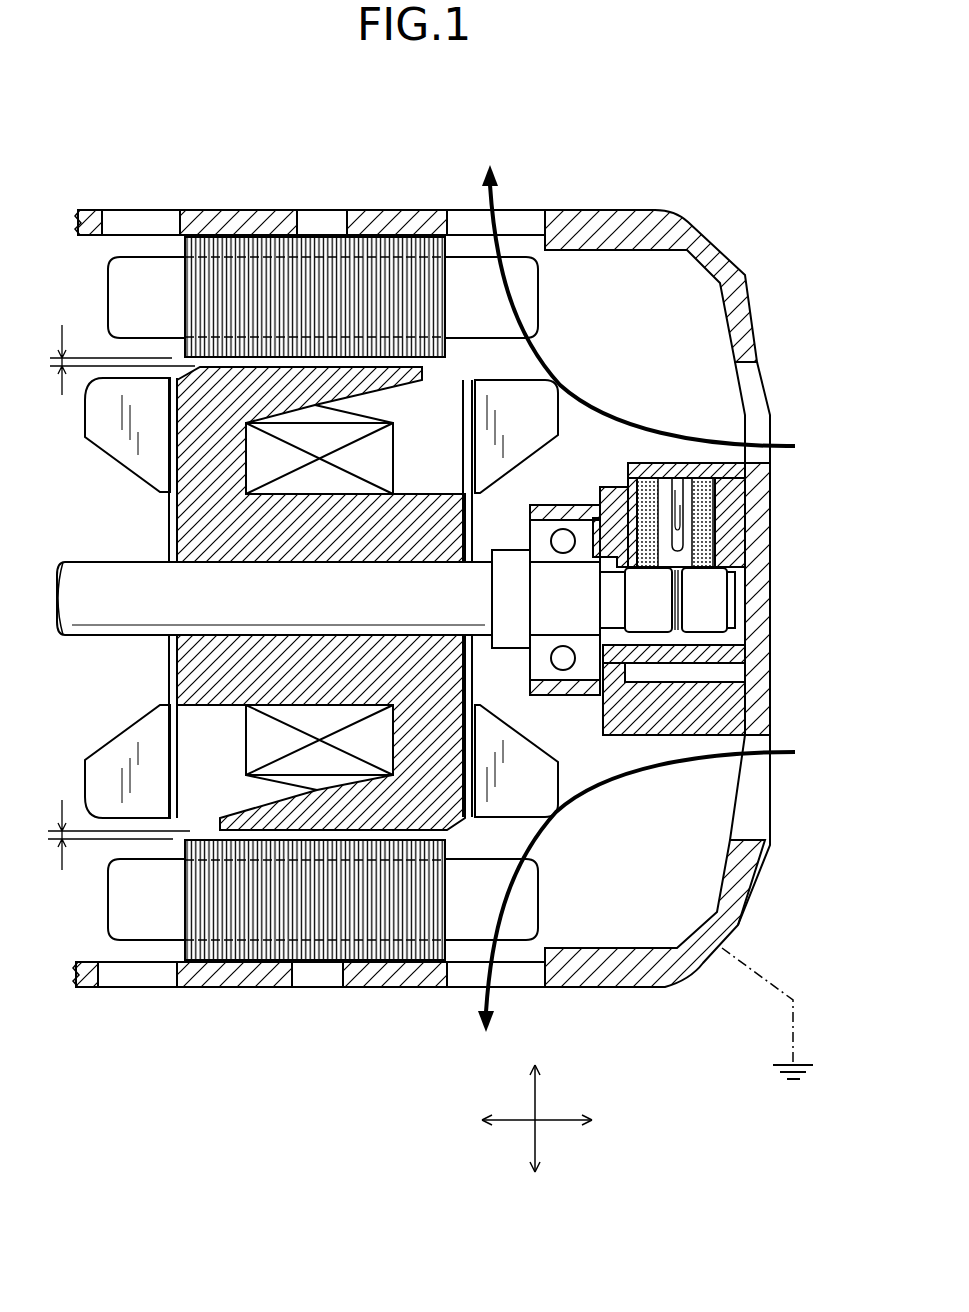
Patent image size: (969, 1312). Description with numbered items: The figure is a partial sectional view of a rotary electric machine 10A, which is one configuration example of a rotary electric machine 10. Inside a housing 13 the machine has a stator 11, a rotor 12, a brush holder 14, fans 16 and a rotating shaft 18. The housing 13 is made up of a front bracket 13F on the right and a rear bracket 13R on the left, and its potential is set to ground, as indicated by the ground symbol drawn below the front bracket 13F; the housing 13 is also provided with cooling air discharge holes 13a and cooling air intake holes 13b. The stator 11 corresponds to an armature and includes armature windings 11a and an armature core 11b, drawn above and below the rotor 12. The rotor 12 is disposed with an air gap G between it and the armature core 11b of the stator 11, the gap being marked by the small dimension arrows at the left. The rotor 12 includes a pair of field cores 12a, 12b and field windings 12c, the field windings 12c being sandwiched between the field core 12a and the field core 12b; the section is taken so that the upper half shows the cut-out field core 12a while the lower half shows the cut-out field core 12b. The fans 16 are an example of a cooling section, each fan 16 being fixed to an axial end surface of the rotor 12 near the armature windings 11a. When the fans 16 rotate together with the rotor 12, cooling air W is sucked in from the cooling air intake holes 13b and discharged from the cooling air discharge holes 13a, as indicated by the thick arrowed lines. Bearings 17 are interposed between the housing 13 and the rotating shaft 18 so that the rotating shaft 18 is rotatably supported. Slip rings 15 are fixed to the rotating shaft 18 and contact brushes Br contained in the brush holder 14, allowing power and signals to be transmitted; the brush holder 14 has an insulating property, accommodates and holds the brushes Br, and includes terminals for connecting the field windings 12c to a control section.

The rotary electric machine 10 is at (426, 642).
The rotary electric machine 10A is at (155, 150).
The stator 11 is at (310, 157).
The armature windings 11a is at (153, 290).
The armature core 11b is at (278, 293).
The rotor 12 is at (462, 157).
The field core 12a is at (290, 390).
The field core 12b is at (441, 435).
The field windings 12c is at (318, 720).
The housing 13 is at (437, 622).
The rear bracket 13R is at (140, 215).
The front bracket 13F is at (628, 232).
The cooling air discharge holes 13a is at (546, 230).
The cooling air intake holes 13b is at (749, 362).
The brush holder 14 is at (745, 537).
The slip rings 15 is at (703, 600).
The fans 16 is at (515, 422).
The bearings 17 is at (563, 658).
The rotating shaft 18 is at (127, 593).
The brushes Br is at (650, 503).
The air gap G is at (103, 597).
The cooling air W is at (636, 598).